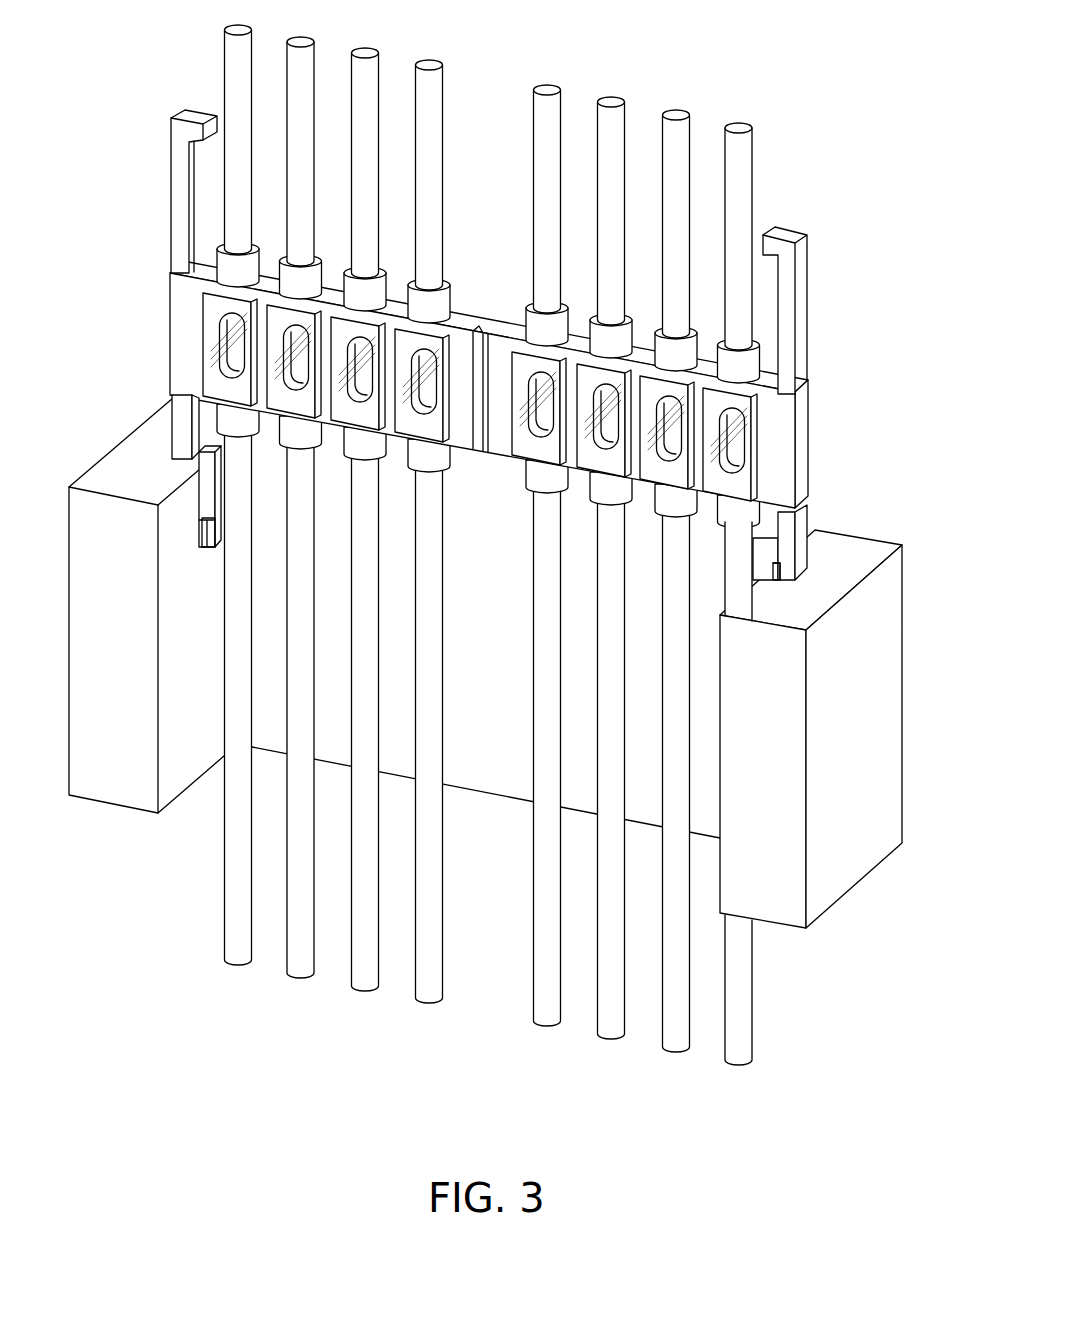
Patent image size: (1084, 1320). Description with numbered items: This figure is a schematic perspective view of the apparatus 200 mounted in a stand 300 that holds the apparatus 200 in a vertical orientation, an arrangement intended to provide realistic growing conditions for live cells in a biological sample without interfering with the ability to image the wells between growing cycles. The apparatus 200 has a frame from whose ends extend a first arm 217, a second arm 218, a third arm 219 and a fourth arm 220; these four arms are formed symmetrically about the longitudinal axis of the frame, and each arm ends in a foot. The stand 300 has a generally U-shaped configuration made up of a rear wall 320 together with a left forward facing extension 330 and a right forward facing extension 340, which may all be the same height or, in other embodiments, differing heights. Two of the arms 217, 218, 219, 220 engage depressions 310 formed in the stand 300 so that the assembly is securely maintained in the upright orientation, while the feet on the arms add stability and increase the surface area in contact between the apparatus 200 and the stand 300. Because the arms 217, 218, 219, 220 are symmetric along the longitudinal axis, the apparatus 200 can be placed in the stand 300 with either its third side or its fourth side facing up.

The apparatus 200 is at (501, 560).
The first arm 217 is at (172, 435).
The second arm 218 is at (171, 228).
The third arm 219 is at (802, 323).
The fourth arm 220 is at (808, 522).
The stand 300 is at (501, 746).
The depressions 310 is at (207, 520).
The rear wall 320 is at (497, 752).
The left forward facing extension 330 is at (95, 585).
The right forward facing extension 340 is at (777, 723).